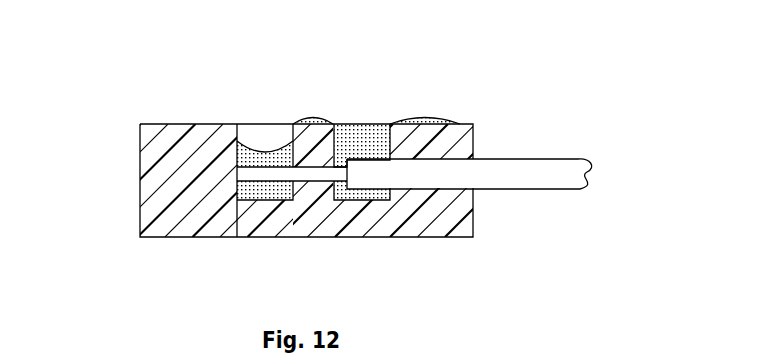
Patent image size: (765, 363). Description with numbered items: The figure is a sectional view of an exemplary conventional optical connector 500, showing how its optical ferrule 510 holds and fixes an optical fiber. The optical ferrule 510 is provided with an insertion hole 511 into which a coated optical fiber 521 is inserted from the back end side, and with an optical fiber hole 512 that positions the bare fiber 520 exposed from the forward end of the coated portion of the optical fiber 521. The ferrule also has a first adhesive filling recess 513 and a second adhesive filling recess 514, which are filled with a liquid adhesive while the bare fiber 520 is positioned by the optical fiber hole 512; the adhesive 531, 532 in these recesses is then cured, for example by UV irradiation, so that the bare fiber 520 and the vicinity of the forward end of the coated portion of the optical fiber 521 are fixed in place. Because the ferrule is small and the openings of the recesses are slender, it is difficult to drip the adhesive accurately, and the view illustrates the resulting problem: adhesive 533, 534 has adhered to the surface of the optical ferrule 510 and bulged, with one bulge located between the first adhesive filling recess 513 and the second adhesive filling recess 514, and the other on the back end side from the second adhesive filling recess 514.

The optical connector 500 is at (544, 96).
The optical ferrule 510 is at (145, 108).
The insertion hole 511 is at (445, 188).
The optical fiber hole 512 is at (307, 168).
The first adhesive filling recess 513 is at (272, 197).
The second adhesive filling recess 514 is at (360, 196).
The bare fiber 520 is at (317, 182).
The coated optical fiber 521 is at (515, 173).
The adhesive 531 is at (278, 160).
The adhesive 532 is at (361, 140).
The adhesive 533 is at (317, 123).
The adhesive 534 is at (421, 122).